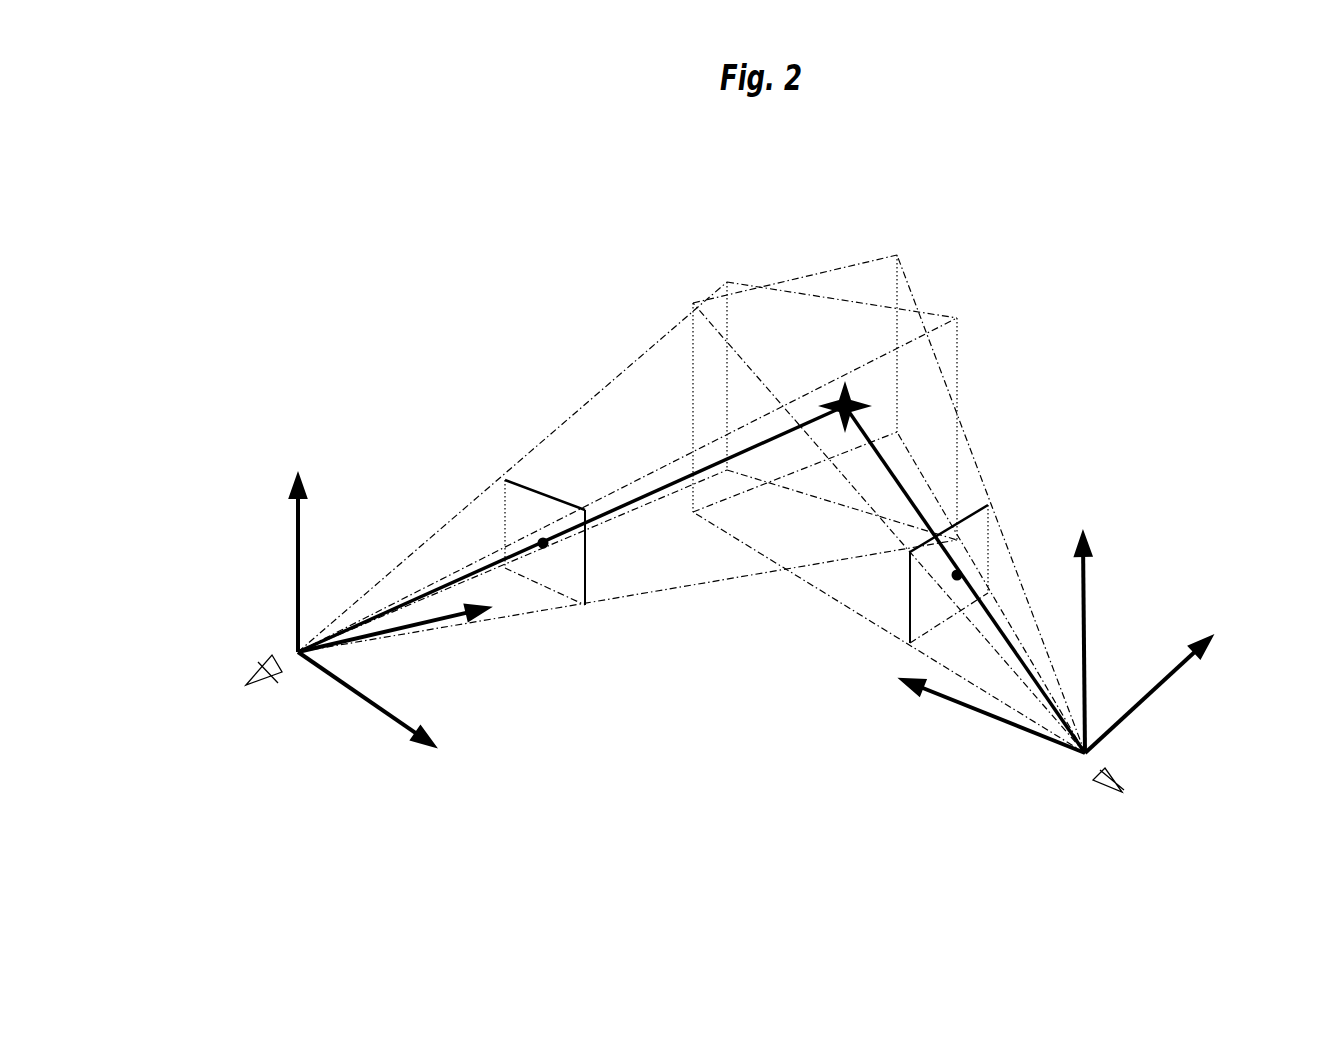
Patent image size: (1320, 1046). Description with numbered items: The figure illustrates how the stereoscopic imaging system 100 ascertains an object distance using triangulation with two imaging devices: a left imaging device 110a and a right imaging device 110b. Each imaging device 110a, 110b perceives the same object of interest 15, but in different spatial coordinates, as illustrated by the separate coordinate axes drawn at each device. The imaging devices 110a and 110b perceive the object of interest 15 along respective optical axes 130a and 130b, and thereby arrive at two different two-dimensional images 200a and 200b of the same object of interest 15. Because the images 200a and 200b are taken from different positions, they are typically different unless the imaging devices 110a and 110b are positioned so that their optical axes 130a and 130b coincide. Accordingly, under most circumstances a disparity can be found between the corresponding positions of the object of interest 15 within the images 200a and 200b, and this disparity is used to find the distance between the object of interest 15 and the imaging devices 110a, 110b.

The imaging system 100 is at (774, 857).
The left imaging device 110a is at (242, 676).
The right imaging device 110b is at (1140, 783).
The optical axis 130a is at (653, 488).
The optical axis 130b is at (902, 490).
The image 200a is at (500, 513).
The image 200b is at (990, 507).
The object of interest 15 is at (860, 411).